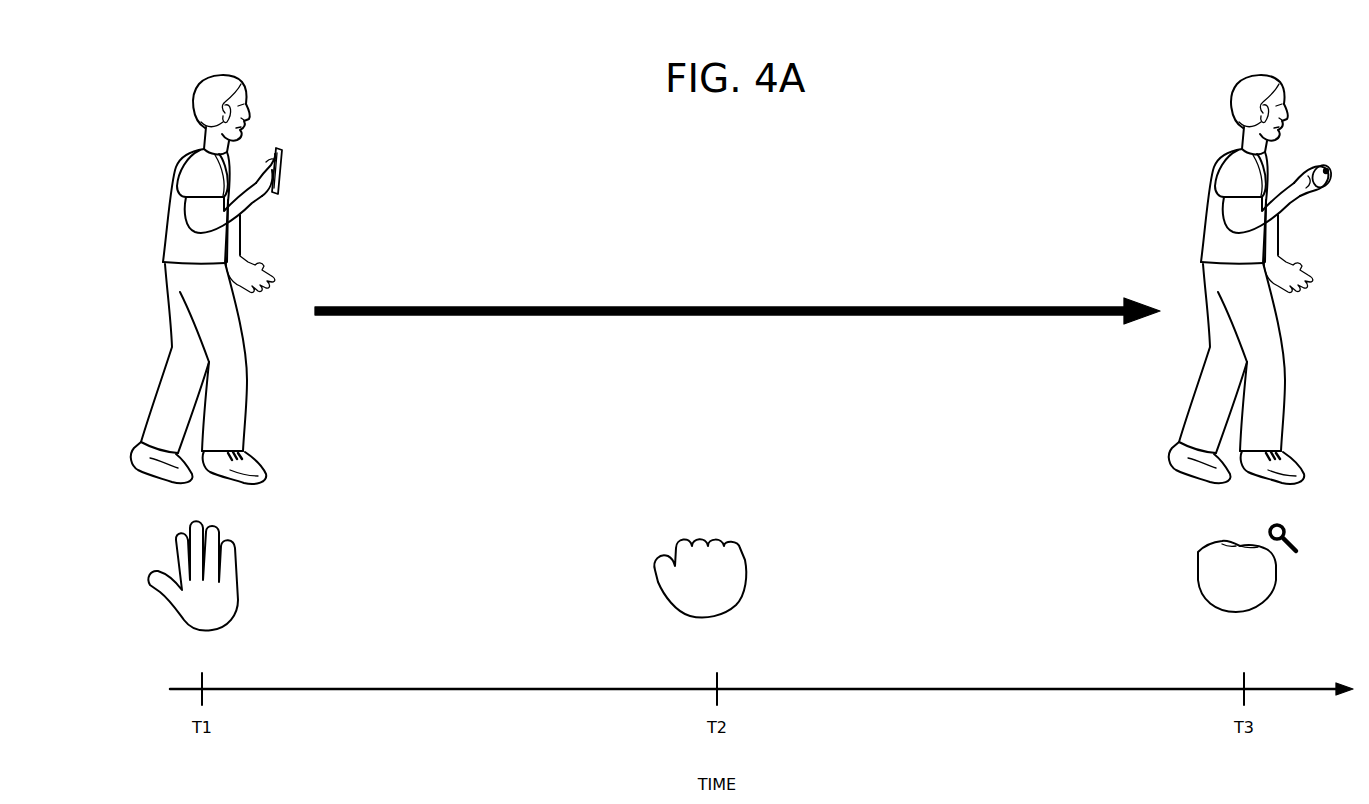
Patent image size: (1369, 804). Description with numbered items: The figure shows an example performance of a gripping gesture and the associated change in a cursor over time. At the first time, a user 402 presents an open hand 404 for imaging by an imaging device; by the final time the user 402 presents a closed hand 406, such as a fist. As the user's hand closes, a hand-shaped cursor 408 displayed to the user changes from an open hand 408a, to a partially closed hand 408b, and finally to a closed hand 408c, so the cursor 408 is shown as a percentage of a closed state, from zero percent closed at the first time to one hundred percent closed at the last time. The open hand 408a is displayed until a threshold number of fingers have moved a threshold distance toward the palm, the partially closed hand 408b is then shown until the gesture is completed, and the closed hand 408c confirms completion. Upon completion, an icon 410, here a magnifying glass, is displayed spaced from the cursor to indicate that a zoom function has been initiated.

The user 402 is at (212, 259).
The open hand 404 is at (298, 143).
The closed hand 406 is at (1319, 142).
The hand-shaped cursor 408 is at (171, 513).
The open hand 408a is at (236, 597).
The partially closed hand 408b is at (742, 598).
The closed hand 408c is at (1272, 598).
The icon 410 is at (1300, 533).